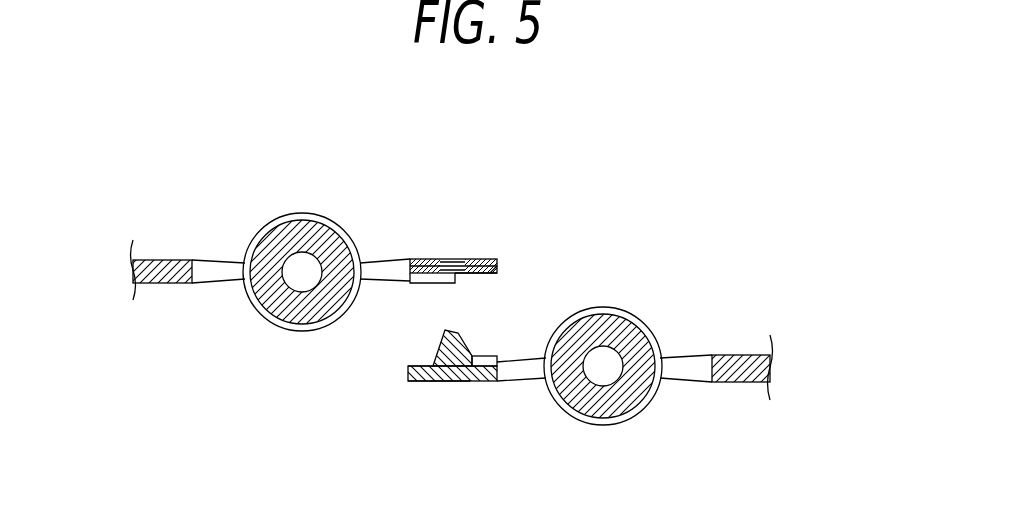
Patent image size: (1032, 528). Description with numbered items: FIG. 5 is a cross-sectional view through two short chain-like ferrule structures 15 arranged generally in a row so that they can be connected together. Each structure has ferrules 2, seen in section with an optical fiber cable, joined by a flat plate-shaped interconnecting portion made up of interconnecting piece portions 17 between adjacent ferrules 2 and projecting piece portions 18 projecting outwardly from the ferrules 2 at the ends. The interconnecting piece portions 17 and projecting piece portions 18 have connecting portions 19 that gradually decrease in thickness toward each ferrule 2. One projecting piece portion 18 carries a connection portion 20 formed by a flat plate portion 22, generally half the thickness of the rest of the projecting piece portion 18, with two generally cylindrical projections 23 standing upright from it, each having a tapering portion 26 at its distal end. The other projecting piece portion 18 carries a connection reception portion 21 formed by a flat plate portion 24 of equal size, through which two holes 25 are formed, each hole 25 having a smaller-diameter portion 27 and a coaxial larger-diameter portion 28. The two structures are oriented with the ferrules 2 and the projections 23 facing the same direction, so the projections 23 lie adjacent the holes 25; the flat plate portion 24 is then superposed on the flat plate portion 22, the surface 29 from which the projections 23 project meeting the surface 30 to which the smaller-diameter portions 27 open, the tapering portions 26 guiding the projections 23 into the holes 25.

The ferrule 2 is at (341, 216).
The short chain-like ferrule structure 15 is at (485, 264).
The interconnecting piece portion 17 is at (158, 258).
The projecting piece portion 18 is at (416, 256).
The connecting portion 19 is at (220, 284).
The connection portion 20 is at (412, 362).
The connection reception portion 21 is at (499, 250).
The flat plate portion 22 is at (416, 382).
The projection 23 is at (467, 352).
The flat plate portion 24 is at (497, 266).
The hole 25 is at (453, 258).
The tapering portion 26 is at (460, 333).
The smaller-diameter portion 27 is at (453, 284).
The larger-diameter portion 28 is at (468, 260).
The one surface 29 is at (452, 383).
The one surface 30 is at (471, 275).